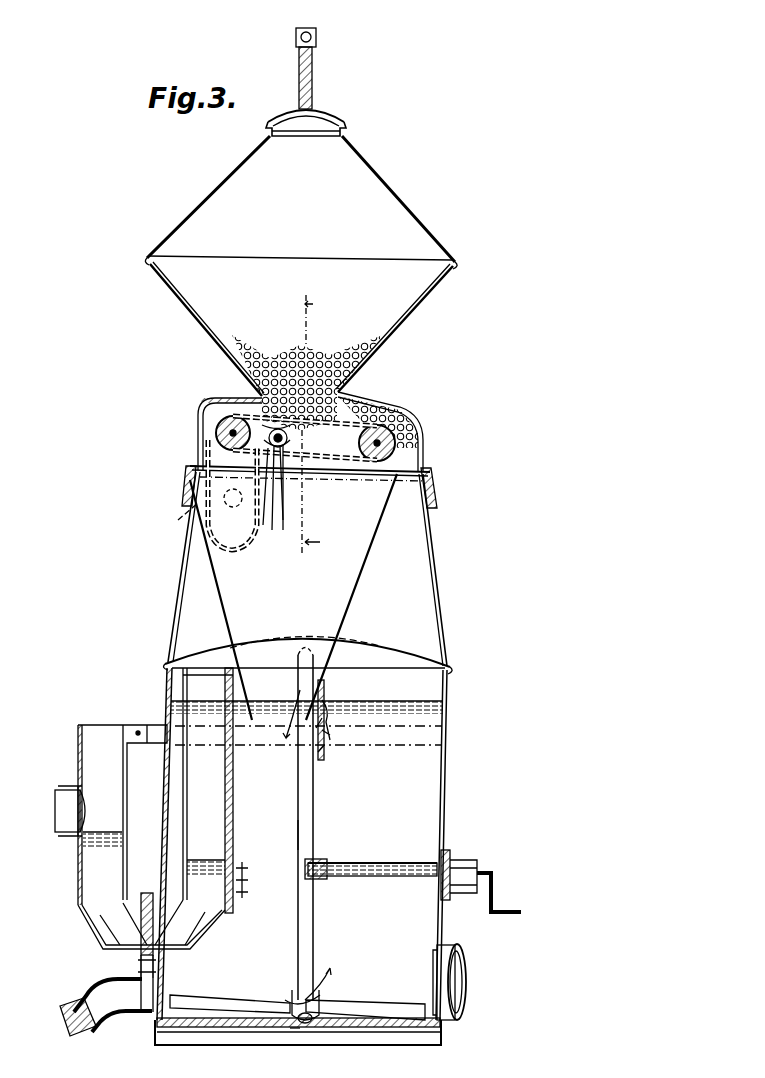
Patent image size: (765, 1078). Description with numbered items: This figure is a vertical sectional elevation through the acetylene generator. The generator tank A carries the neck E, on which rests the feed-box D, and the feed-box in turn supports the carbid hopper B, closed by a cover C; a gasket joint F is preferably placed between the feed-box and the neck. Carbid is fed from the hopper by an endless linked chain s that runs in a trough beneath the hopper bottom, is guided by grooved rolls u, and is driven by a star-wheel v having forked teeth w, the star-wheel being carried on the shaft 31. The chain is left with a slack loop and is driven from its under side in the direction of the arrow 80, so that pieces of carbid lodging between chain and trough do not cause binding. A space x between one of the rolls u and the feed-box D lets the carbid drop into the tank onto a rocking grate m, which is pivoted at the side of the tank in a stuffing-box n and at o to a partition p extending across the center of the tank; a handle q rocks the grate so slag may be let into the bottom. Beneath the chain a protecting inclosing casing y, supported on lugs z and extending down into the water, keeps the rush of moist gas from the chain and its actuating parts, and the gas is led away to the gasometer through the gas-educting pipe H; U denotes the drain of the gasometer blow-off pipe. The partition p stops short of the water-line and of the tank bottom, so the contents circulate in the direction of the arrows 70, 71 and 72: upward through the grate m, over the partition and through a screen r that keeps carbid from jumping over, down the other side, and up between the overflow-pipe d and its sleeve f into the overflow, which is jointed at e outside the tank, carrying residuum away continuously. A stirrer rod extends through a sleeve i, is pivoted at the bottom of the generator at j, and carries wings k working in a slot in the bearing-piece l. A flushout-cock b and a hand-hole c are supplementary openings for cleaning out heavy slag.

The cover C is at (330, 114).
The carbid hopper B is at (410, 212).
The arrow 80 is at (243, 408).
The neck E is at (458, 580).
The feed-box D is at (404, 412).
The grooved rolls u is at (216, 428).
The drain U is at (395, 440).
The space x is at (410, 426).
The gasket joint F is at (190, 469).
The lugs z is at (186, 483).
The forked teeth w is at (290, 468).
The star-wheel v is at (276, 488).
The linked chain s is at (250, 520).
The gas-educting pipe H is at (182, 548).
The shaft 31 is at (281, 499).
The protecting inclosing casing y is at (222, 600).
The generator tank A is at (449, 768).
The partition p is at (318, 768).
The screen r is at (326, 698).
The arrow 71 is at (332, 716).
The sleeve i is at (298, 830).
The sleeve f is at (240, 770).
The overflow-pipe d is at (150, 800).
The hand-hole c is at (160, 722).
The joint e is at (146, 898).
The arrow 72 is at (253, 880).
The flushout-cock b is at (120, 1014).
The rocking grate m is at (365, 862).
The pivot o is at (320, 877).
The stuffing-box n is at (452, 852).
The handle q is at (485, 870).
The wings k is at (208, 1000).
The bearing-piece l is at (323, 976).
The arrow 70 is at (317, 991).
The pivot j is at (296, 1032).